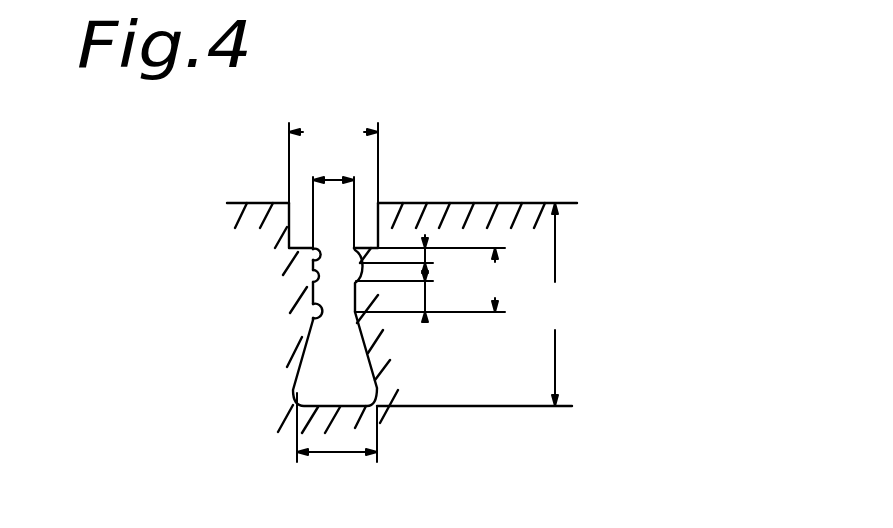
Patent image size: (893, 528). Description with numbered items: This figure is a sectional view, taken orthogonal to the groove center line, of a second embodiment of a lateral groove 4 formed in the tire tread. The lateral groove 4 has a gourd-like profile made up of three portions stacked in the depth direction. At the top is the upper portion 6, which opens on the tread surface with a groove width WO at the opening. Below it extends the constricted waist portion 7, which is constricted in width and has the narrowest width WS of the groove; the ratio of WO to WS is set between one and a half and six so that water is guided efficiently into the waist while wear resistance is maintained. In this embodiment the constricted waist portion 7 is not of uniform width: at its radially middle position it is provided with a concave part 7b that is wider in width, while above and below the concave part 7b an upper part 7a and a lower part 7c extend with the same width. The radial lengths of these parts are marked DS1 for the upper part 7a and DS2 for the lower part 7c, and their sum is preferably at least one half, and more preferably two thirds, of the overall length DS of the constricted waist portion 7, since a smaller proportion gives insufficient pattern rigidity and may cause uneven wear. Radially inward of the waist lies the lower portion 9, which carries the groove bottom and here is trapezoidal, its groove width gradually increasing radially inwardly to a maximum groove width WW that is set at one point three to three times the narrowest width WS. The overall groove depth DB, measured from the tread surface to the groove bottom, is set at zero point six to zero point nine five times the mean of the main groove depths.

The lateral groove 4 is at (153, 297).
The upper portion 6 is at (300, 218).
The constricted waist portion 7 is at (205, 287).
The upper part 7a is at (308, 253).
The concave part 7b is at (308, 283).
The lower part 7c is at (305, 323).
The lower portion 9 is at (318, 377).
The groove width at the opening WO is at (333, 157).
The narrowest width WS is at (330, 195).
The length of the upper part DS1 is at (434, 248).
The length of the lower part DS2 is at (426, 295).
The overall length of the constricted waist portion DS is at (436, 280).
The groove depth DB is at (553, 304).
The maximum groove width WW is at (340, 455).